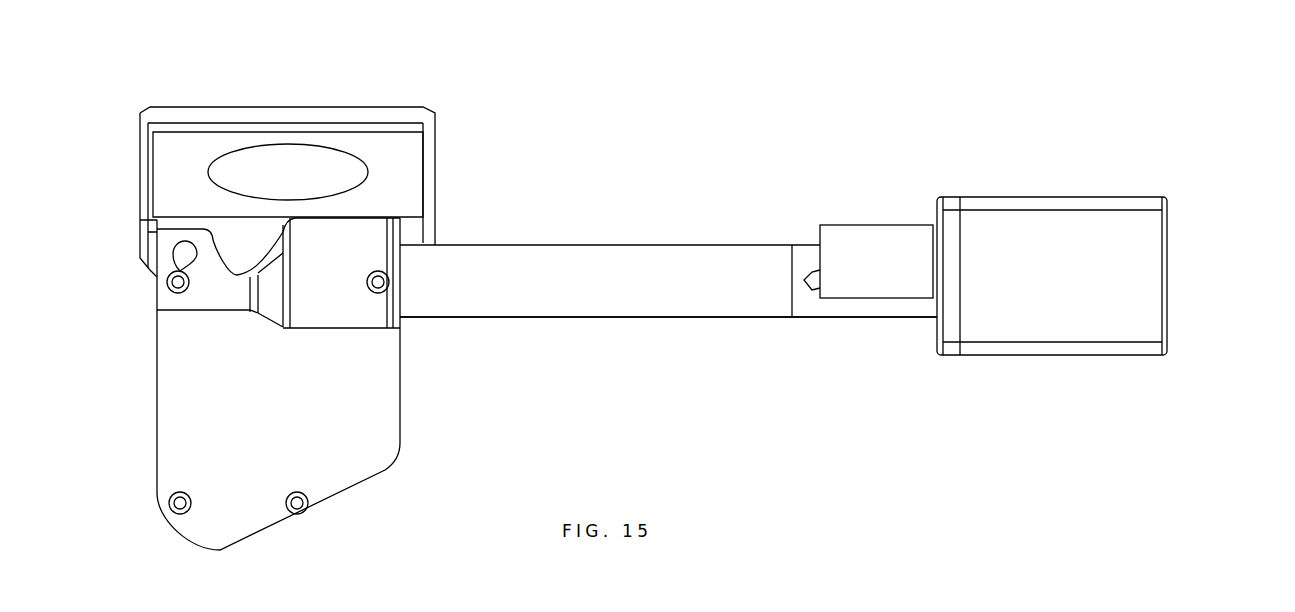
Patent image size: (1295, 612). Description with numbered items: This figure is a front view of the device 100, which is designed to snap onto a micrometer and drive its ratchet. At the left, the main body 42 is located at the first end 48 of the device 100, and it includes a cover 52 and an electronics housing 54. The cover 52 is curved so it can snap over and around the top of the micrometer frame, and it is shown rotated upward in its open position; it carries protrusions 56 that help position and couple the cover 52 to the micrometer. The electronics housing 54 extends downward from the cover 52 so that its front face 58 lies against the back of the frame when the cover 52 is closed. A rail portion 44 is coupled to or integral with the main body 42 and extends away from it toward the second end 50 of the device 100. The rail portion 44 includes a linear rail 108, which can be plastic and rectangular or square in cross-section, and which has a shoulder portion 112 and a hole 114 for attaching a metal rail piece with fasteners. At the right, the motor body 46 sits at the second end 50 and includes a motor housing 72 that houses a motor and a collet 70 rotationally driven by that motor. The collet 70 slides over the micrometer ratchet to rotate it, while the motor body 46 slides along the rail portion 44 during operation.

The device 100 is at (160, 85).
The main body 42 is at (253, 87).
The cover 52 is at (403, 123).
The first end 48 is at (110, 232).
The protrusions 56 is at (237, 262).
The front face 58 is at (387, 425).
The electronics housing 54 is at (167, 402).
The rail portion 44 is at (725, 205).
The linear rail 108 is at (632, 302).
The shoulder portion 112 is at (792, 317).
The hole 114 is at (815, 278).
The collet 70 is at (898, 287).
The motor body 46 is at (1157, 167).
The motor housing 72 is at (1050, 348).
The second end 50 is at (1228, 282).